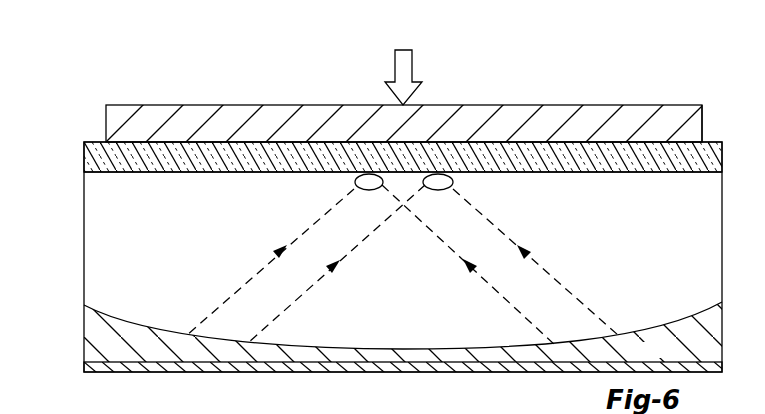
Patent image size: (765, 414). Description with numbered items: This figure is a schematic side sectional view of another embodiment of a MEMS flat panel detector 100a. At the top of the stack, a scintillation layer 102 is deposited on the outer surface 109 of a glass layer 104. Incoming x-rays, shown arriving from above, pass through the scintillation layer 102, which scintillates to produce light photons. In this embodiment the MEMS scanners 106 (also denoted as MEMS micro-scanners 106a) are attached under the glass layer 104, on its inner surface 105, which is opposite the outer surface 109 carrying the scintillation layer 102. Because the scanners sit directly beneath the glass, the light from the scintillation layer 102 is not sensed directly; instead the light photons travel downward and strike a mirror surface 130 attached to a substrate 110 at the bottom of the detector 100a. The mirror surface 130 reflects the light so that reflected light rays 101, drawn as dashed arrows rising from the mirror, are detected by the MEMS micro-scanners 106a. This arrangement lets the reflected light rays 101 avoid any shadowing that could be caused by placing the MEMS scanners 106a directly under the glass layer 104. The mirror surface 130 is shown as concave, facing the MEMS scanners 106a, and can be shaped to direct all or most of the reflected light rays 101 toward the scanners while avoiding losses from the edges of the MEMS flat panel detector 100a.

The MEMS flat panel detector 100a is at (587, 94).
The light rays 101 is at (253, 281).
The scintillation layer 102 is at (106, 125).
The glass layer 104 is at (84, 160).
The inner surface 105 is at (614, 173).
The MEMS scanner 106 is at (358, 176).
The MEMS micro-scanner 106a is at (450, 176).
The outer surface 109 is at (713, 141).
The substrate 110 is at (147, 373).
The mirror surface 130 is at (105, 318).